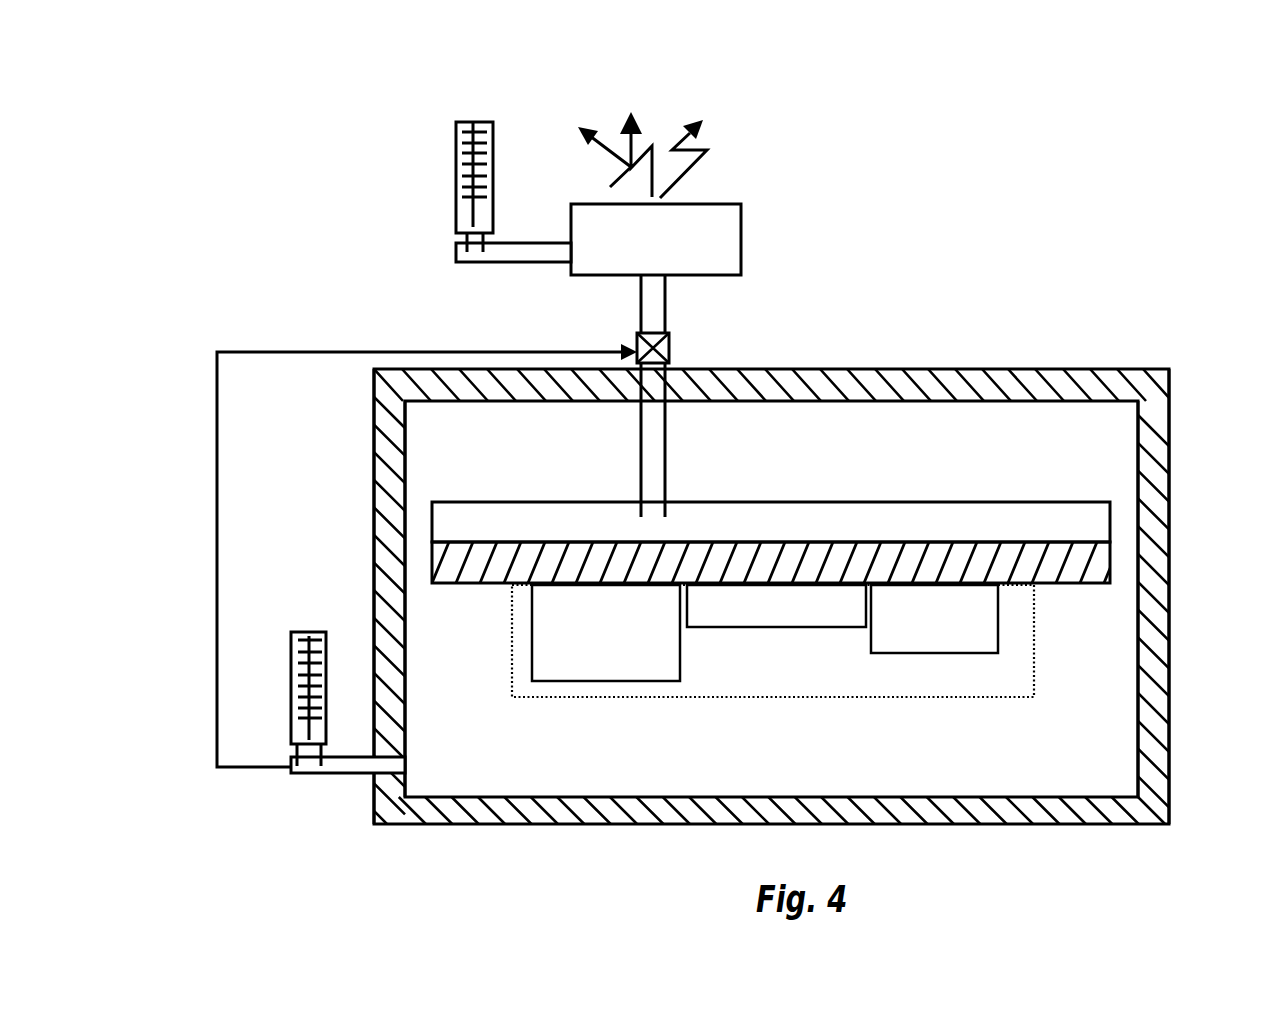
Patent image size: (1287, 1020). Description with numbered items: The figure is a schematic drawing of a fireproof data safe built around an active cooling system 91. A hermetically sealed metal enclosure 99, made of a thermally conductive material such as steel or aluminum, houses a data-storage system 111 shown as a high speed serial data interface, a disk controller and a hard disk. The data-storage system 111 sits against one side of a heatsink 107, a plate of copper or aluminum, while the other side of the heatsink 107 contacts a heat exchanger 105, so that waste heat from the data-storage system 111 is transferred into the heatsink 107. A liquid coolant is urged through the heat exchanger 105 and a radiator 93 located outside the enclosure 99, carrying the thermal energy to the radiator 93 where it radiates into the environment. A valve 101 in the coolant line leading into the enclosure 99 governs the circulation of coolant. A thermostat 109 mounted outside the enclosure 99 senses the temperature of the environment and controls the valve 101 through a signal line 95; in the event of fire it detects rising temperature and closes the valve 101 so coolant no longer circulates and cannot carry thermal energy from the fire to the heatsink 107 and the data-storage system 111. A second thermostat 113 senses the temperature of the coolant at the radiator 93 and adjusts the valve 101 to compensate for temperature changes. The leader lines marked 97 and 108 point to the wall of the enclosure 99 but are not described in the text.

The active cooling system 91 is at (638, 88).
The radiator 93 is at (703, 233).
The signal line 95 is at (242, 351).
The chamber 97 is at (1012, 350).
The metal enclosure 99 is at (1169, 363).
The valve 101 is at (677, 352).
The heat exchanger 105 is at (792, 530).
The heatsink 107 is at (1112, 563).
The chamber side wall 108 is at (382, 478).
The thermostat 109 is at (297, 668).
The data-storage system 111 is at (705, 700).
The thermostat 113 is at (470, 123).